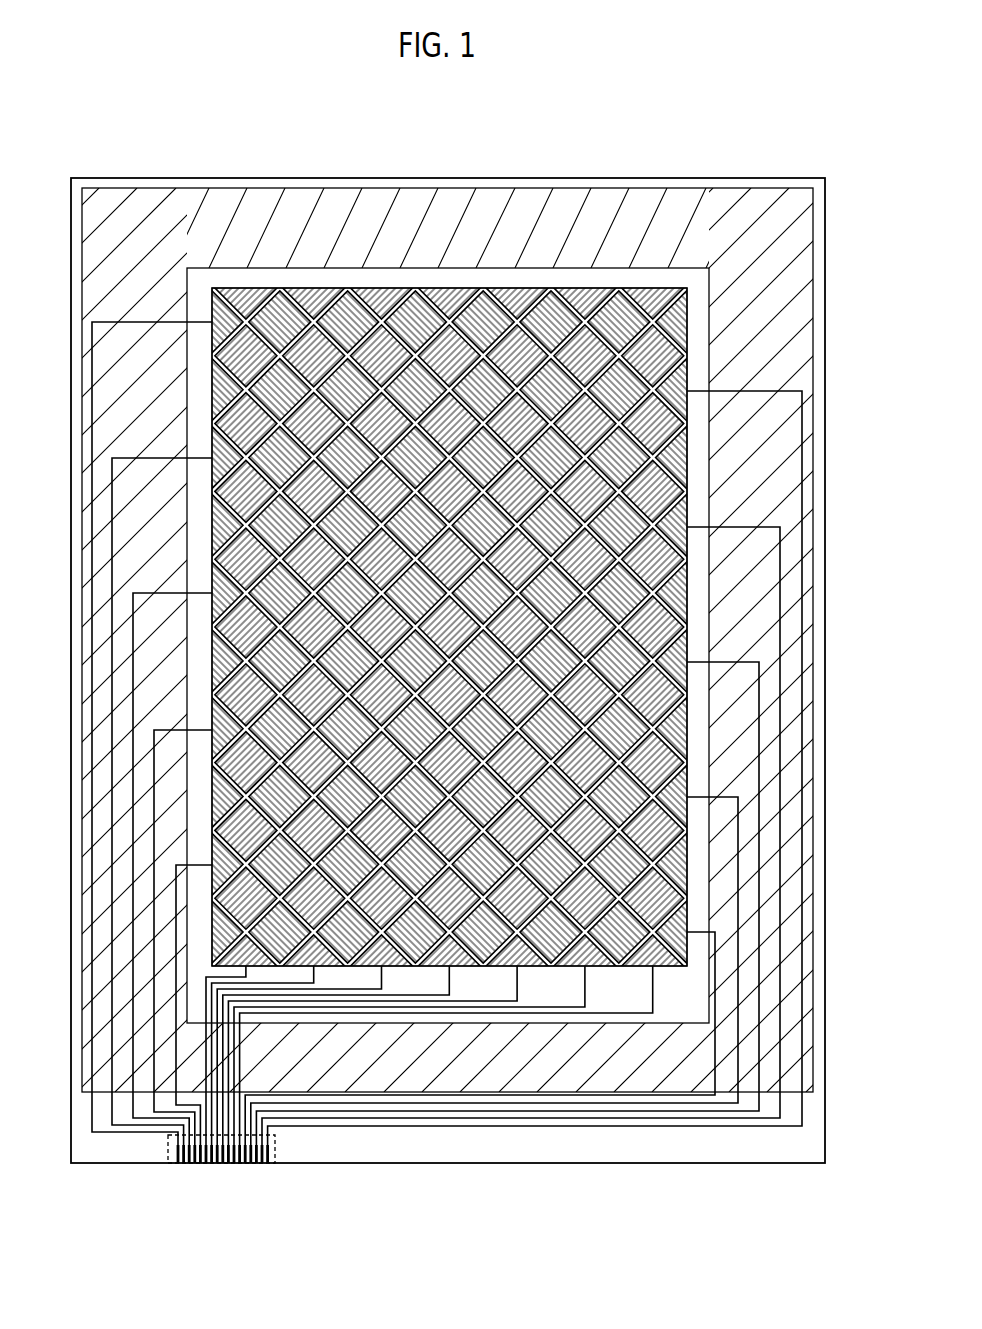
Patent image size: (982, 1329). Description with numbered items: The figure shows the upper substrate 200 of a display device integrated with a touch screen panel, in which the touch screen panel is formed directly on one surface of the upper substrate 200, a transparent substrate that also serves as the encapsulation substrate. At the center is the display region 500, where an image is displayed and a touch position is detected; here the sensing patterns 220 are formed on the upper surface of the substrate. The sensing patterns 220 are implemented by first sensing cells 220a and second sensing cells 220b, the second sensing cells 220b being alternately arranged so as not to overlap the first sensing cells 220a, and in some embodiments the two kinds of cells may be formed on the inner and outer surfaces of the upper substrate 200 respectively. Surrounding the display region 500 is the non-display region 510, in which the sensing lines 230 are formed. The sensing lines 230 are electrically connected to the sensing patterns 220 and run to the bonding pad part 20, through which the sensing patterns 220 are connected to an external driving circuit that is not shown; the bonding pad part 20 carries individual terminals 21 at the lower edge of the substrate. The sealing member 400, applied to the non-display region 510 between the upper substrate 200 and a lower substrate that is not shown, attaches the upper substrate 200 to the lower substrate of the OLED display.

The bonding pad part 20 is at (276, 1152).
The connection terminals 21 is at (178, 1150).
The upper substrate 200 is at (574, 180).
The sensing patterns 220 is at (333, 131).
The first sensing cells 220a is at (282, 308).
The second sensing cells 220b is at (240, 320).
The sensing lines 230 is at (93, 322).
The sealing member 400 is at (813, 561).
The display region 500 is at (697, 319).
The non-display region 510 is at (748, 180).